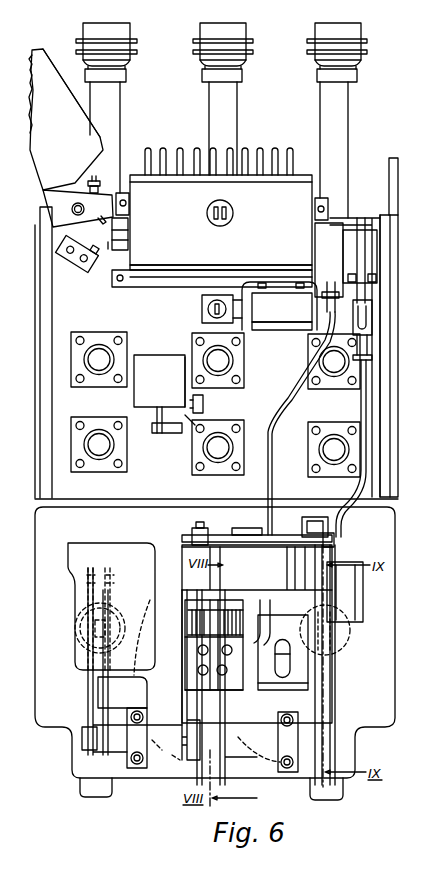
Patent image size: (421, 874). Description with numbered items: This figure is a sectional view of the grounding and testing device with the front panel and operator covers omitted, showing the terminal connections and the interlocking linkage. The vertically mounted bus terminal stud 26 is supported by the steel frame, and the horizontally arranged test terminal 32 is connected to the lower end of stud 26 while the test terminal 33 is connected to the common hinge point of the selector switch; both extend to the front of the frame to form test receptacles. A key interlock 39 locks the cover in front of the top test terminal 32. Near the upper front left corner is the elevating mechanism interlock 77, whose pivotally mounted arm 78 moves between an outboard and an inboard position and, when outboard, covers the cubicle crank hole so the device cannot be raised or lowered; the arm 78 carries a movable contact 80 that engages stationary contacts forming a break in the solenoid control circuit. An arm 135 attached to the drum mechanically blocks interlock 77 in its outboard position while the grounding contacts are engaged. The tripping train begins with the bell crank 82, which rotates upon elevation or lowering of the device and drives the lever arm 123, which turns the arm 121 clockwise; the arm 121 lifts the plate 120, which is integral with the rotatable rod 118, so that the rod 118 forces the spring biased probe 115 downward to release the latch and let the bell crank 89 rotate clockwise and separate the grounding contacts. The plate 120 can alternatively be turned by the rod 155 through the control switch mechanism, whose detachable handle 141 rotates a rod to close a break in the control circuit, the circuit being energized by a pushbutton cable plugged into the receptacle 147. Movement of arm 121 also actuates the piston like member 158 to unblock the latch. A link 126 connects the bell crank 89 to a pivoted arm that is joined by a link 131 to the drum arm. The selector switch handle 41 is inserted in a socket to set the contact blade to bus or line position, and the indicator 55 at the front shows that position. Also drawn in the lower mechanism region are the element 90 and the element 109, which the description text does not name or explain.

The bus terminal stud 26 is at (130, 35).
The test terminal 32 is at (228, 361).
The test terminal 33 is at (213, 457).
The key interlock 39 is at (202, 310).
The selector switch handle 41 is at (398, 492).
The indicator 55 is at (160, 358).
The elevating mechanism interlock 77 is at (75, 166).
The pivotally mounted arm 78 is at (53, 65).
The movable contact 80 is at (77, 267).
The bell crank 82 is at (363, 223).
The bell crank 89 is at (197, 708).
The shaft 90 is at (160, 748).
The bracket 109 is at (90, 708).
The spring biased probe 115 is at (230, 573).
The rotatable rod 118 is at (192, 538).
The plate 120 is at (242, 536).
The arm 121 is at (305, 528).
The lever arm 123 is at (362, 403).
The link 126 is at (257, 697).
The link 131 is at (288, 398).
The arm 135 is at (128, 226).
The detachable handle 141 is at (287, 665).
The receptacle 147 is at (232, 219).
The rod 155 is at (305, 558).
The piston like member 158 is at (288, 557).